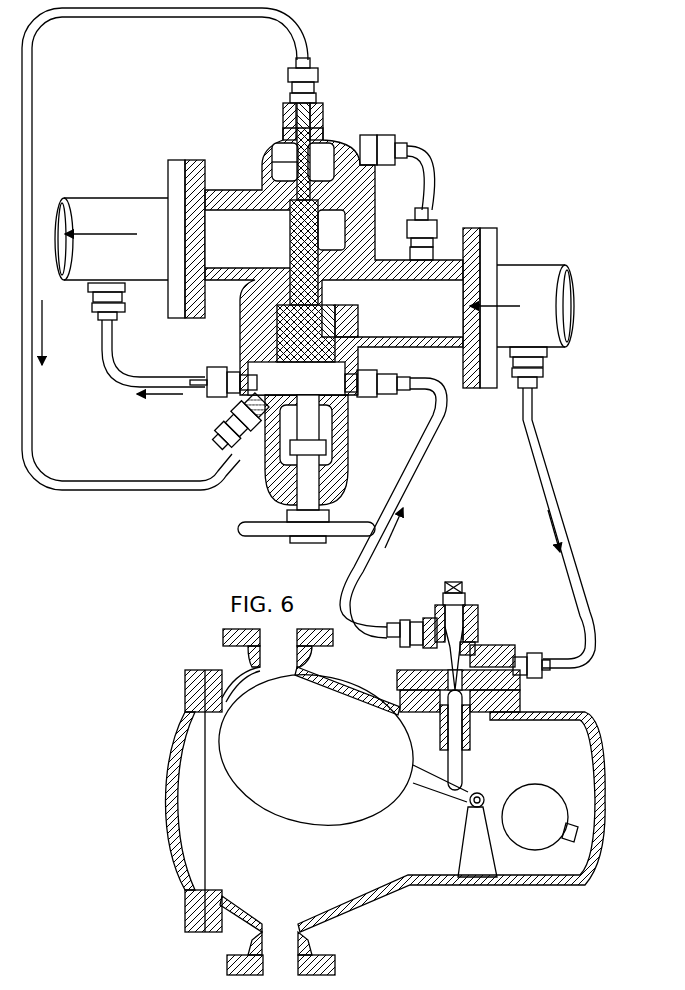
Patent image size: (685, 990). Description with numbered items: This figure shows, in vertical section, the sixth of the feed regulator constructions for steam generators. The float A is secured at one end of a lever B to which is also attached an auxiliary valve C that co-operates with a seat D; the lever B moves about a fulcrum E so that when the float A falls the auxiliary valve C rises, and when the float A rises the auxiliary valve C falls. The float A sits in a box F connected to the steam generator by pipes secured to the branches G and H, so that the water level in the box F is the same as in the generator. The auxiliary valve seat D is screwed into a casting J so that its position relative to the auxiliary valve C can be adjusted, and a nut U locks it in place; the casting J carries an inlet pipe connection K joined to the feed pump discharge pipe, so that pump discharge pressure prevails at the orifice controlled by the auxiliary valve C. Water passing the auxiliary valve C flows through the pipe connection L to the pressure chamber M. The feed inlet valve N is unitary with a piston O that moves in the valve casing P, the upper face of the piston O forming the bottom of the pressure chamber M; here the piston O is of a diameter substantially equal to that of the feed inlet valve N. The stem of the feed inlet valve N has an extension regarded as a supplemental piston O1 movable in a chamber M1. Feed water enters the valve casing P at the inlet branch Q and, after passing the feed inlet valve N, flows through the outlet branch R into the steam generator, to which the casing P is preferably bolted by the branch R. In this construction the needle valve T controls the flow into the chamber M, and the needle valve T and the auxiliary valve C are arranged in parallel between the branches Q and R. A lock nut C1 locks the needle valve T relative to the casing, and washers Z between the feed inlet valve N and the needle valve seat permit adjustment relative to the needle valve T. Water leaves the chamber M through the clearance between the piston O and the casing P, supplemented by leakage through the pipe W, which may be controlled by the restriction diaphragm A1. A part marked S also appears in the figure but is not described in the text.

The float A is at (316, 750).
The lever B is at (425, 784).
The auxiliary valve C is at (430, 668).
The auxiliary valve seat D is at (470, 650).
The fulcrum E is at (483, 793).
The float box F is at (510, 884).
The branch G is at (260, 932).
The branch H is at (259, 780).
The casting J is at (472, 624).
The inlet pipe connection K is at (556, 532).
The pipe connection L is at (408, 498).
The pressure chamber M is at (300, 382).
The chamber M1 is at (321, 162).
The feed inlet valve N is at (318, 258).
The piston O is at (306, 333).
The supplemental piston O1 is at (304, 204).
The valve casing P is at (458, 268).
The inlet branch Q is at (502, 308).
The outlet branch R is at (135, 239).
The gland S is at (310, 120).
The needle valve T is at (334, 261).
The washers Z is at (280, 173).
The nut U is at (463, 600).
The pipe W is at (172, 383).
The restriction diaphragm A1 is at (246, 397).
The lock nut C1 is at (292, 97).